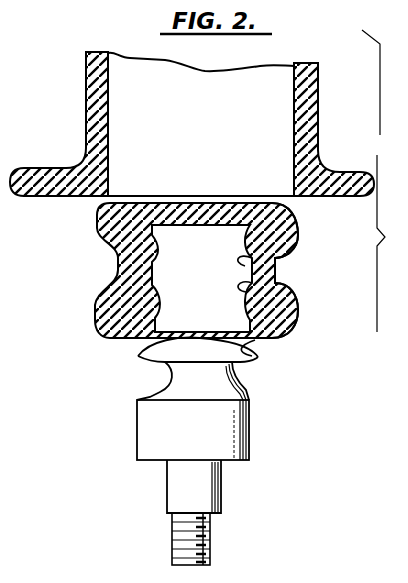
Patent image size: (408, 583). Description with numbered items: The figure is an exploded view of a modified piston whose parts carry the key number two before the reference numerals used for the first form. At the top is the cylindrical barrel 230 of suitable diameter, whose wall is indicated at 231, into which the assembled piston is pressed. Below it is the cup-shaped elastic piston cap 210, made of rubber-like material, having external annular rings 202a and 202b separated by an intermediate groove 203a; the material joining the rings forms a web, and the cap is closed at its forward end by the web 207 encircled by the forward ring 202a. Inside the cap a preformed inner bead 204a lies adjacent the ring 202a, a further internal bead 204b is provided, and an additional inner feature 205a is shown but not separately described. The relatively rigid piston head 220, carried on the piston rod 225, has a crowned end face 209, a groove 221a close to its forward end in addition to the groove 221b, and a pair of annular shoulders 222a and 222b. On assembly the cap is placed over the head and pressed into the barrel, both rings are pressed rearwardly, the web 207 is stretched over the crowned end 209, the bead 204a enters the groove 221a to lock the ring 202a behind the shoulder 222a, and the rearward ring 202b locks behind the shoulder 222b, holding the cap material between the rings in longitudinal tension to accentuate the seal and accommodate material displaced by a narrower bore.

The cylindrical barrel 230 is at (296, 122).
The housing base wall 231 is at (292, 186).
The web 207 is at (208, 203).
The piston cap 210 is at (208, 257).
The forward ring 202a is at (297, 222).
The rearward ring 202b is at (296, 315).
The intermediate groove 203a is at (270, 272).
The inner bead 204a is at (258, 262).
The internal annular bead 204b is at (255, 345).
The groove 205a is at (258, 286).
The end face 209 is at (142, 357).
The piston head 220 is at (204, 441).
The groove 221a is at (238, 380).
The groove 221b is at (222, 490).
The forward shoulder 222a is at (246, 362).
The rearward shoulder 222b is at (249, 465).
The piston rod 225 is at (212, 537).